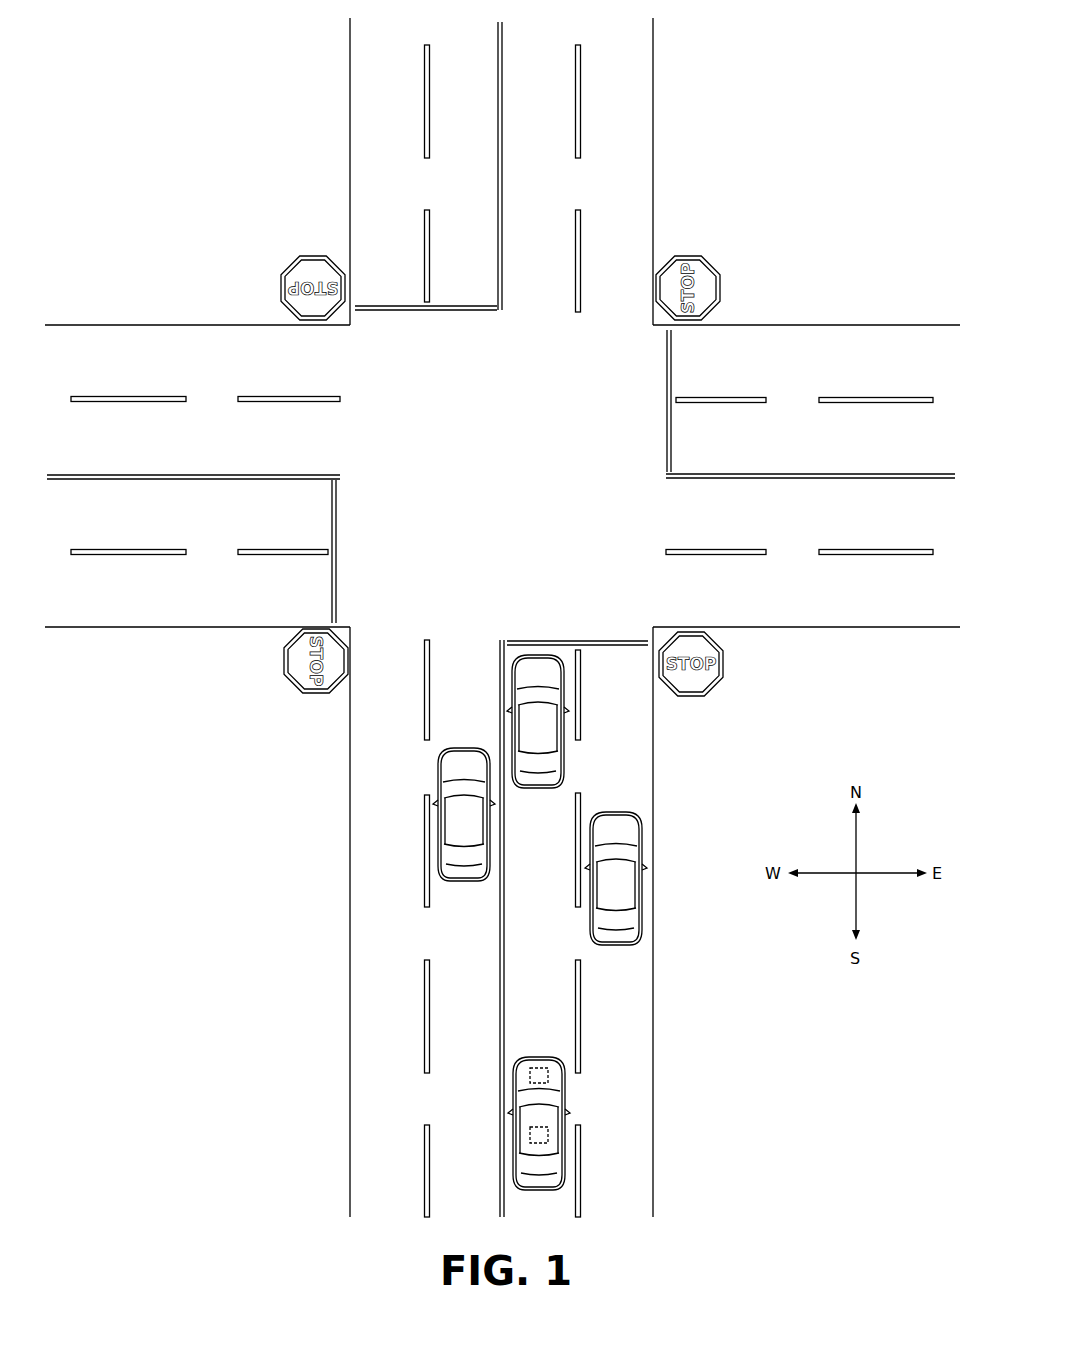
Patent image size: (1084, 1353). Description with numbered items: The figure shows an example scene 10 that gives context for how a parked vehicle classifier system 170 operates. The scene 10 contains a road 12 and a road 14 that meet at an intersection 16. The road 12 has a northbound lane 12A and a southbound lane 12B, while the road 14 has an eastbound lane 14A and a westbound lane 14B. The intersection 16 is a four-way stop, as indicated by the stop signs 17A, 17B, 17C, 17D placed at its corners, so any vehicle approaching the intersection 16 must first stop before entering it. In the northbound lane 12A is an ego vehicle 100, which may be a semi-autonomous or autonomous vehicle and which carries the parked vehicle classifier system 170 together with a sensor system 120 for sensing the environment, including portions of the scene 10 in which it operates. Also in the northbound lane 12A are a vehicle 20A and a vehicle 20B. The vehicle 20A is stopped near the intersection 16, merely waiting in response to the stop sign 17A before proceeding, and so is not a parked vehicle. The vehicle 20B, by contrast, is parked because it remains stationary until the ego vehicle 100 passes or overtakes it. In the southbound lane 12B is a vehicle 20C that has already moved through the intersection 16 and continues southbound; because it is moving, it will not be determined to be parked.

The scene 10 is at (778, 146).
The road 12 is at (491, 916).
The northbound lane 12A is at (623, 1005).
The southbound lane 12B is at (372, 878).
The road 14 is at (150, 582).
The eastbound lane 14A is at (838, 590).
The westbound lane 14B is at (143, 336).
The intersection 16 is at (499, 484).
The stop sign 17A is at (697, 677).
The stop sign 17B is at (700, 280).
The stop sign 17C is at (313, 270).
The stop sign 17D is at (296, 662).
The vehicle 20A is at (540, 737).
The vehicle 20B is at (620, 885).
The vehicle 20C is at (458, 798).
The ego vehicle 100 is at (555, 1080).
The sensor system 120 is at (536, 1060).
The parked vehicle classifier system 170 is at (550, 1136).